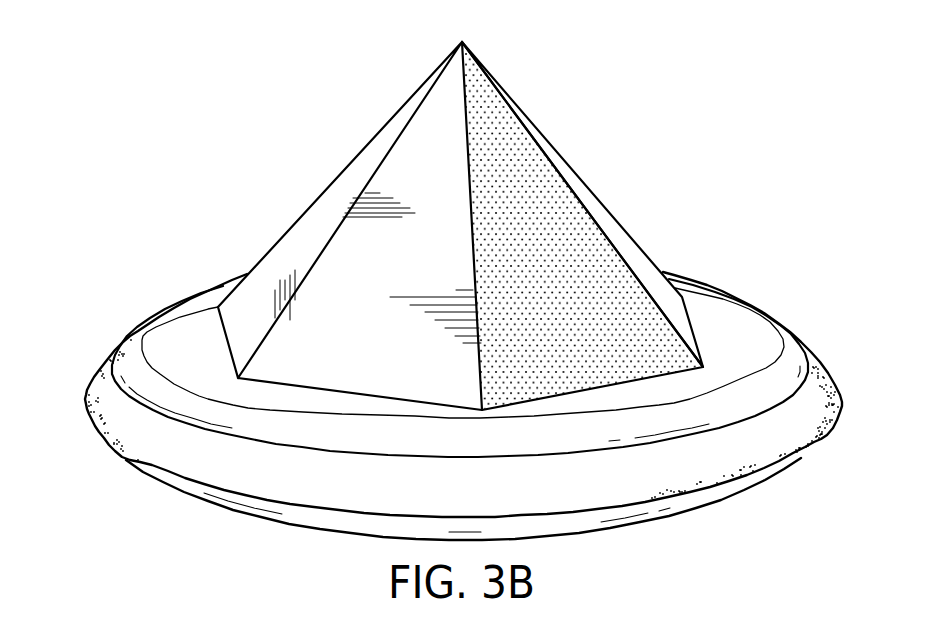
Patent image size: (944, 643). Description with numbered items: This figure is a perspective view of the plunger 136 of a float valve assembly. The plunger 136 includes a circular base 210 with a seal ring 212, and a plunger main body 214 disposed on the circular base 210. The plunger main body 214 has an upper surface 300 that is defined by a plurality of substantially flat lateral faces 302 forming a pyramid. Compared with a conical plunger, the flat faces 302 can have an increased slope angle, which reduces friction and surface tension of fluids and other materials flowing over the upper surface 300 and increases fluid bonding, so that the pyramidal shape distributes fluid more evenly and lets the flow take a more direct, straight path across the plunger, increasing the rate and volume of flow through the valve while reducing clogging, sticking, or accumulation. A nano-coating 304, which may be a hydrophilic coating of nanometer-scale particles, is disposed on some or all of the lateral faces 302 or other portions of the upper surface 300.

The plunger 136 is at (429, 274).
The upper surface 300 is at (462, 226).
The substantially flat lateral faces 302 is at (413, 143).
The nano-coating 304 is at (547, 218).
The circular base 210 is at (730, 287).
The seal ring 212 is at (93, 427).
The plunger main body 214 is at (429, 379).